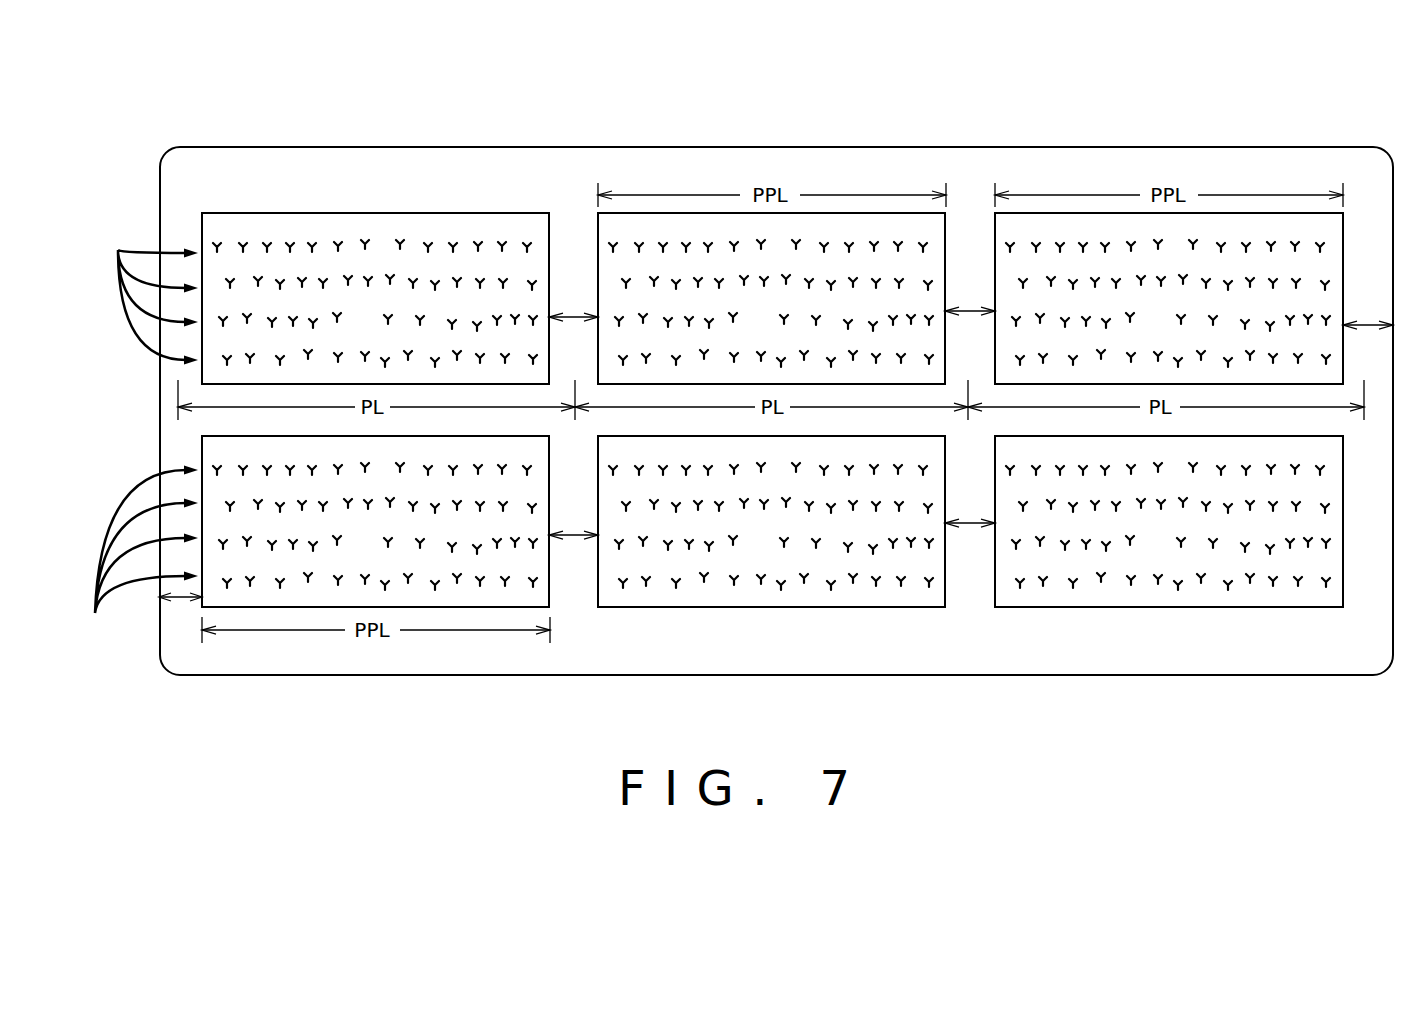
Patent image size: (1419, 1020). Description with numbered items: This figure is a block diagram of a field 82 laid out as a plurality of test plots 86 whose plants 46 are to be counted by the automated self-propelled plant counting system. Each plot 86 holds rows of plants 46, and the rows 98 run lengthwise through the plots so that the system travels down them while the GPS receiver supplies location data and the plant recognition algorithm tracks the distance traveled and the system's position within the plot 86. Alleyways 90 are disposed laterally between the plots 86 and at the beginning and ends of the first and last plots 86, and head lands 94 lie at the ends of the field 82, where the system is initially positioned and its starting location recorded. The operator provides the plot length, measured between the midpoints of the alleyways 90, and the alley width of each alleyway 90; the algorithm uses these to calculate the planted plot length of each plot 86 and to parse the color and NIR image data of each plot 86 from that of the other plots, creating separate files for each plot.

The plants 46 is at (505, 357).
The field 82 is at (1047, 146).
The plots 86 is at (772, 404).
The alleyways 90 is at (577, 240).
The head lands 94 is at (178, 220).
The rows 98 is at (141, 428).